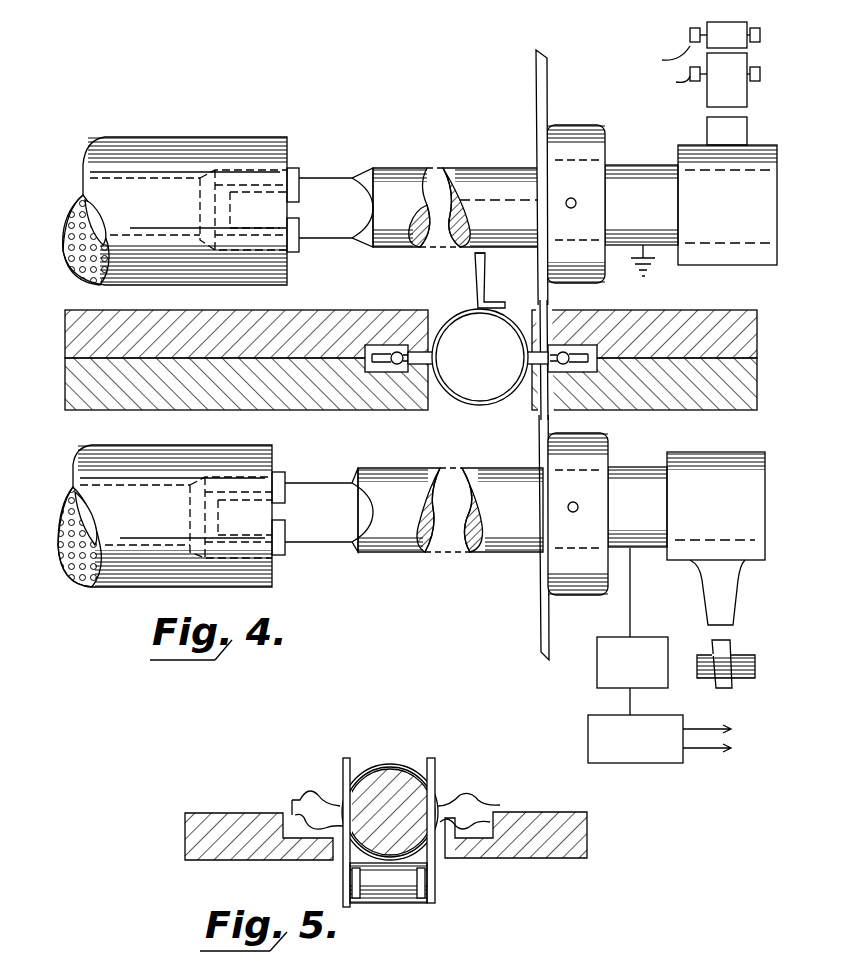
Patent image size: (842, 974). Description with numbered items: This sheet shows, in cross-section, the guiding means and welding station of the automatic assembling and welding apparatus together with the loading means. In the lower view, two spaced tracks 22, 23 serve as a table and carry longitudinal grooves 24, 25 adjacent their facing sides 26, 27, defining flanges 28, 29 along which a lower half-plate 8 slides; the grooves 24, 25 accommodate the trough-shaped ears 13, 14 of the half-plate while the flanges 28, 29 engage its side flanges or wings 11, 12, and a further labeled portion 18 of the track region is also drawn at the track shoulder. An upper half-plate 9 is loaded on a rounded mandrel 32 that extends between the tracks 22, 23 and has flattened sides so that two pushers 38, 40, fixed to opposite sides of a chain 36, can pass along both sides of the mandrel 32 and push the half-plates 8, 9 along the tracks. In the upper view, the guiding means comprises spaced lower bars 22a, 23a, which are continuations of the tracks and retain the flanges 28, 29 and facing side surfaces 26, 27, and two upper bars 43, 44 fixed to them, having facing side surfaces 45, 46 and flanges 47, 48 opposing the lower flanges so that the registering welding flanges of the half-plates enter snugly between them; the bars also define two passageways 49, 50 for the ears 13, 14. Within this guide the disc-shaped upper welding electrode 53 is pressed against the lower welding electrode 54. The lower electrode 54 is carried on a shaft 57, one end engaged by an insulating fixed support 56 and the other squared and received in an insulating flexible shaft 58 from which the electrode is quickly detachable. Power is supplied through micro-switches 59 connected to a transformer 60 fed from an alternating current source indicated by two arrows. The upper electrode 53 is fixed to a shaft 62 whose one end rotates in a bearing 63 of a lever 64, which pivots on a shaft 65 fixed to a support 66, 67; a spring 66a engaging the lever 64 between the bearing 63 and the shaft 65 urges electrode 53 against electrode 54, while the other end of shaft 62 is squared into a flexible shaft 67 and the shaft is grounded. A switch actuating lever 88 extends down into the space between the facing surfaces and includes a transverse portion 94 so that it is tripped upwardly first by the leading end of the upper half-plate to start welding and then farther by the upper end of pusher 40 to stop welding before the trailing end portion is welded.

In FIG. 5, the half-plate 8 is at (378, 868).
In FIG. 5, the half-plate 9 is at (392, 760).
In FIG. 5, the side flange 11 is at (300, 803).
In FIG. 5, the side flange 12 is at (470, 800).
In FIG. 5, the trough-shaped ear 13 is at (272, 862).
In FIG. 5, the trough-shaped ear 14 is at (495, 812).
In FIG. 5, the recess 18 is at (322, 862).
In FIG. 5, the track 22 is at (556, 815).
In FIG. 4, the lower bar 22a is at (140, 405).
In FIG. 5, the track 23 is at (195, 820).
In FIG. 4, the lower bar 23a is at (690, 410).
In FIG. 5, the longitudinal groove 24 is at (298, 862).
In FIG. 5, the longitudinal groove 25 is at (482, 840).
In FIG. 4, the facing side 26 is at (432, 408).
In FIG. 5, the facing side 26 is at (340, 865).
In FIG. 4, the facing side 27 is at (515, 390).
In FIG. 5, the facing side 27 is at (442, 862).
In FIG. 4, the flange 28 is at (445, 388).
In FIG. 5, the flange 29 is at (434, 893).
In FIG. 5, the mandrel 32 is at (378, 790).
In FIG. 5, the chain 36 is at (392, 905).
In FIG. 5, the pusher 38 is at (347, 758).
In FIG. 5, the pusher 40 is at (432, 758).
In FIG. 4, the upper bar 43 is at (70, 312).
In FIG. 4, the upper bar 44 is at (727, 222).
In FIG. 4, the facing side surface 45 is at (450, 312).
In FIG. 4, the facing side surface 46 is at (530, 345).
In FIG. 4, the flange 47 is at (425, 345).
In FIG. 4, the flange 48 is at (592, 305).
In FIG. 4, the passageway 49 is at (385, 366).
In FIG. 4, the passageway 50 is at (580, 370).
In FIG. 4, the upper welding electrode 53 is at (548, 98).
In FIG. 4, the lower welding electrode 54 is at (540, 594).
In FIG. 4, the fixed support 56 is at (738, 606).
In FIG. 4, the shaft 57 is at (490, 470).
In FIG. 4, the insulating flexible shaft 58 is at (98, 588).
In FIG. 4, the micro-switch 59 is at (600, 680).
In FIG. 4, the transformer 60 is at (668, 765).
In FIG. 4, the shaft 62 is at (470, 176).
In FIG. 4, the bearing 63 is at (760, 260).
In FIG. 4, the lever 64 is at (745, 132).
In FIG. 4, the shaft 65 is at (664, 70).
In FIG. 4, the support 66 is at (690, 38).
In FIG. 4, the spring 66a is at (760, 78).
In FIG. 4, the flexible shaft 67 is at (200, 150).
In FIG. 4, the lever 88 is at (488, 266).
In FIG. 4, the transverse portion 94 is at (489, 300).